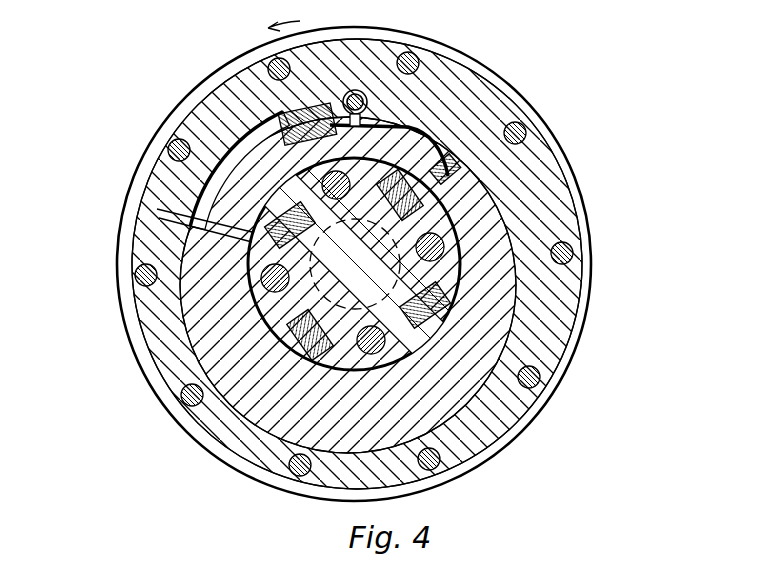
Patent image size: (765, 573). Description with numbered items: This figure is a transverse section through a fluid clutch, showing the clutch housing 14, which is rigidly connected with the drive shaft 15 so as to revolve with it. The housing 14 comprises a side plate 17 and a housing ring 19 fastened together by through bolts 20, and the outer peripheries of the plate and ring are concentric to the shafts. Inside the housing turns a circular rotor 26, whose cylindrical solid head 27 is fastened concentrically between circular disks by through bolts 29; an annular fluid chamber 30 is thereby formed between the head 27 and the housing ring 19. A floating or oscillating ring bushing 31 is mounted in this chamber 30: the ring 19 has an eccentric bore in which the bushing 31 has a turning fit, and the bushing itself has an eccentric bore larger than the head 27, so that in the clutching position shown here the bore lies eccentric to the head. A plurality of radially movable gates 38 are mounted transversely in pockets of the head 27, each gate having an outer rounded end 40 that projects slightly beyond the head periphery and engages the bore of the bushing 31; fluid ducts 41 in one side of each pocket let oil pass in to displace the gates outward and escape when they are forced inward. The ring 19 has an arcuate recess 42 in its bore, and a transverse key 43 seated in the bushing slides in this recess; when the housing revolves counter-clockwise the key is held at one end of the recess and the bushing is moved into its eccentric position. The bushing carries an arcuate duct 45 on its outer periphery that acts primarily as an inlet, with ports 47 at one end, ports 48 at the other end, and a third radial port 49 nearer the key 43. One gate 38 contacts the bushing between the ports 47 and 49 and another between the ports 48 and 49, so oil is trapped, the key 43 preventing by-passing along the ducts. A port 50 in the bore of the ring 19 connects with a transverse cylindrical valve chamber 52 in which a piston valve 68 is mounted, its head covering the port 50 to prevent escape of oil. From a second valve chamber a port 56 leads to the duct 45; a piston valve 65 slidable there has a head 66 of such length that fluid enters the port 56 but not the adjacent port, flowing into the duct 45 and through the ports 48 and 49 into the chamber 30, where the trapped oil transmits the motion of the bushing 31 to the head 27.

The clutch housing 14 is at (592, 252).
The drive shaft 15 is at (322, 240).
The side plate 17 is at (500, 84).
The housing ring 19 is at (254, 68).
The through bolts 20 is at (432, 58).
The rotor 26 is at (242, 286).
The head 27 is at (270, 356).
The through bolts 29 is at (384, 372).
The annular fluid chamber 30 is at (482, 440).
The ring bushing 31 is at (196, 325).
The gates 38 is at (280, 198).
The outer rounded end 40 is at (414, 352).
The fluid ducts 41 is at (300, 270).
The arcuate recess 42 is at (220, 96).
The key 43 is at (284, 136).
The arcuate duct 45 is at (205, 186).
The ports 47 is at (240, 250).
The ports 48 is at (458, 184).
The third radial port 49 is at (376, 130).
The port 50 is at (160, 244).
The valve chamber 52 is at (402, 44).
The port 56 is at (366, 104).
The piston valve 65 is at (362, 92).
The head 66 is at (351, 92).
The piston valve 68 is at (158, 214).